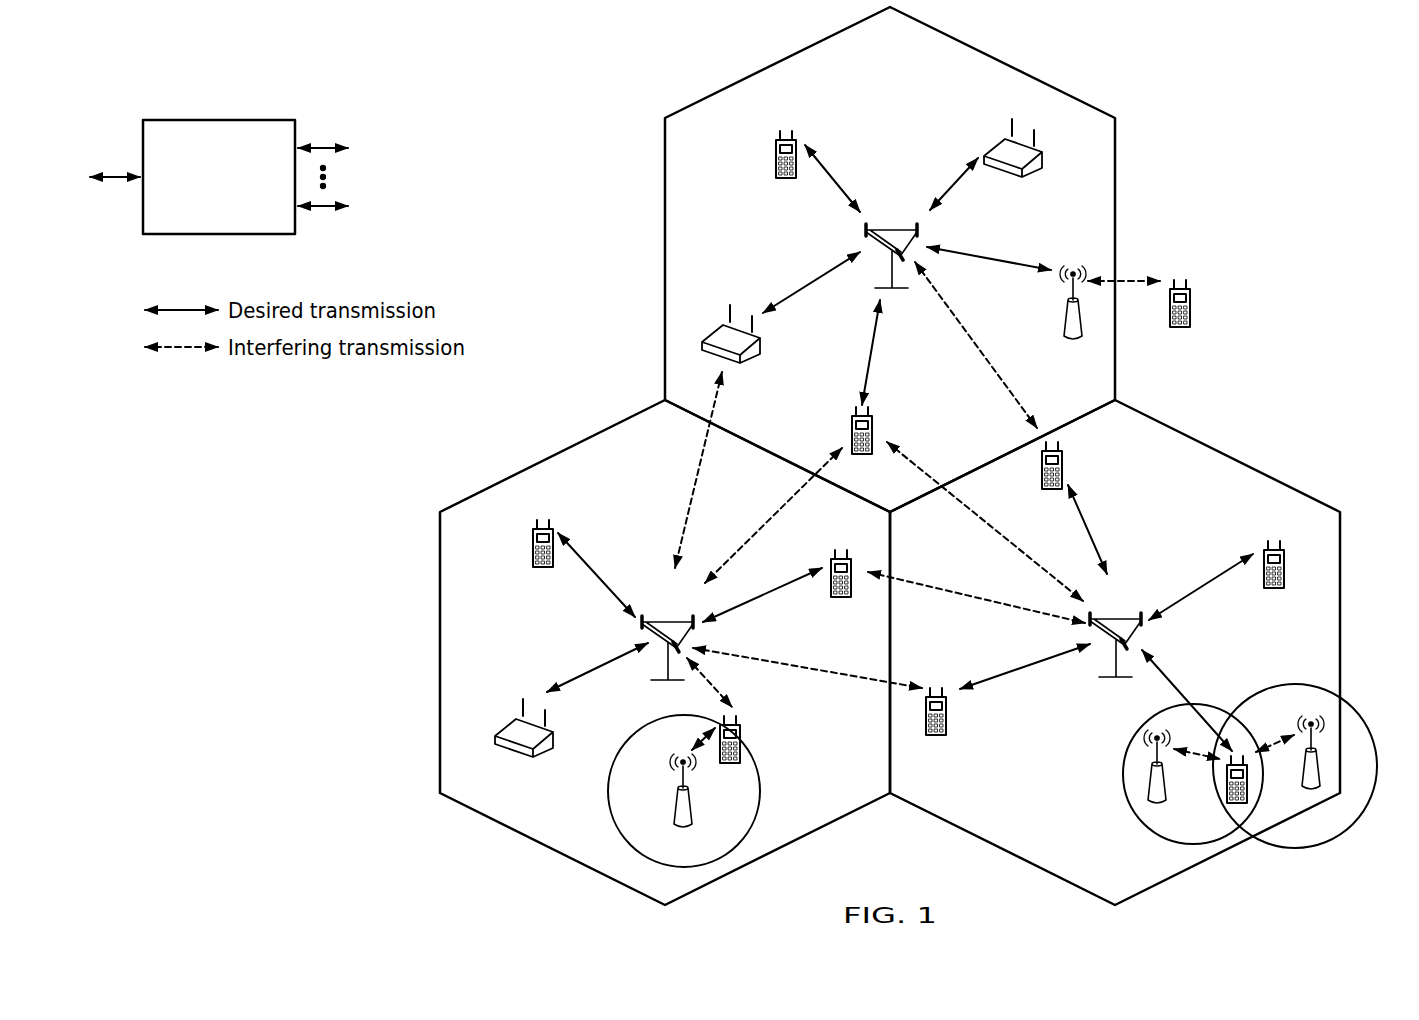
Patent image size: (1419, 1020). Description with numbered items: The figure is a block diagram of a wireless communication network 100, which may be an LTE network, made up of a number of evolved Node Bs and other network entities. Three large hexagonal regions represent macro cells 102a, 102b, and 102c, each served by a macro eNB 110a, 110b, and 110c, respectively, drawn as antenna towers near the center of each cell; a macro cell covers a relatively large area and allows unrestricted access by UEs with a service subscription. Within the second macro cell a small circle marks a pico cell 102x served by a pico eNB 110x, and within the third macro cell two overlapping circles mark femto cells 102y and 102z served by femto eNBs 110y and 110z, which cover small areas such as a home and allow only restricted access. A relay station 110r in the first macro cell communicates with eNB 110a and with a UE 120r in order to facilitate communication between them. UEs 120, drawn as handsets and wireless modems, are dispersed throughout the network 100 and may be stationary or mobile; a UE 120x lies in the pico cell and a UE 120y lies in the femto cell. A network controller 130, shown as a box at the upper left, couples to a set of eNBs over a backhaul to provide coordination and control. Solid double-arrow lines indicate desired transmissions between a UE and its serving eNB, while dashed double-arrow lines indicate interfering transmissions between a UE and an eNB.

The wireless communication network 100 is at (1270, 79).
The macro cell 102a is at (1002, 62).
The macro cell 102b is at (554, 457).
The macro cell 102c is at (1228, 457).
The pico cell 102x is at (630, 737).
The femto cell 102y is at (1128, 745).
The femto cell 102z is at (1282, 682).
The macro eNB 110a is at (889, 227).
The macro eNB 110b is at (670, 618).
The macro eNB 110c is at (1113, 618).
The relay station 110r is at (1065, 320).
The pico eNB 110x is at (692, 818).
The femto eNB 110y is at (1166, 796).
The femto eNB 110z is at (1320, 780).
The user equipment 120 is at (778, 147).
The UE 120r is at (1191, 320).
The UE 120x is at (740, 735).
The UE 120y is at (1228, 800).
The network controller 130 is at (216, 118).